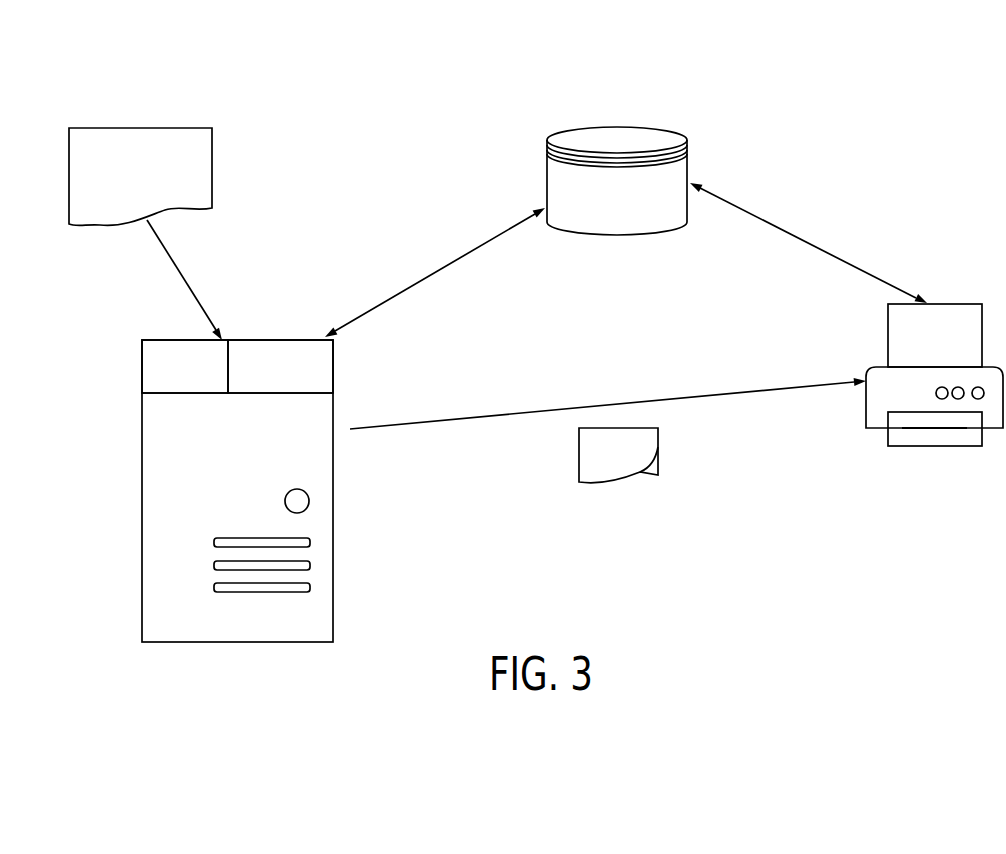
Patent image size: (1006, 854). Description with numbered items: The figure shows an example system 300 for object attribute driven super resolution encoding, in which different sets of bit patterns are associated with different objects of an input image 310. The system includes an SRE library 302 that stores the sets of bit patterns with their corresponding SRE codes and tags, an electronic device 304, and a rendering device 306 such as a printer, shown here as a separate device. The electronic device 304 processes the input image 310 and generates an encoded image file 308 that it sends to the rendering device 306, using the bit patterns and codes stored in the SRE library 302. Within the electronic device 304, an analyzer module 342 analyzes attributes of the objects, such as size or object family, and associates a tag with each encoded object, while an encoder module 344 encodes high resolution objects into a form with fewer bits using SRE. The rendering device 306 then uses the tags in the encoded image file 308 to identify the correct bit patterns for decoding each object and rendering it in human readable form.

The system 300 is at (440, 113).
The SRE library 302 is at (626, 220).
The electronic device 304 is at (156, 455).
The rendering device 306 is at (935, 447).
The encoded image file 308 is at (586, 471).
The input image 310 is at (129, 136).
The analyzer module 342 is at (156, 372).
The encoder module 344 is at (270, 355).